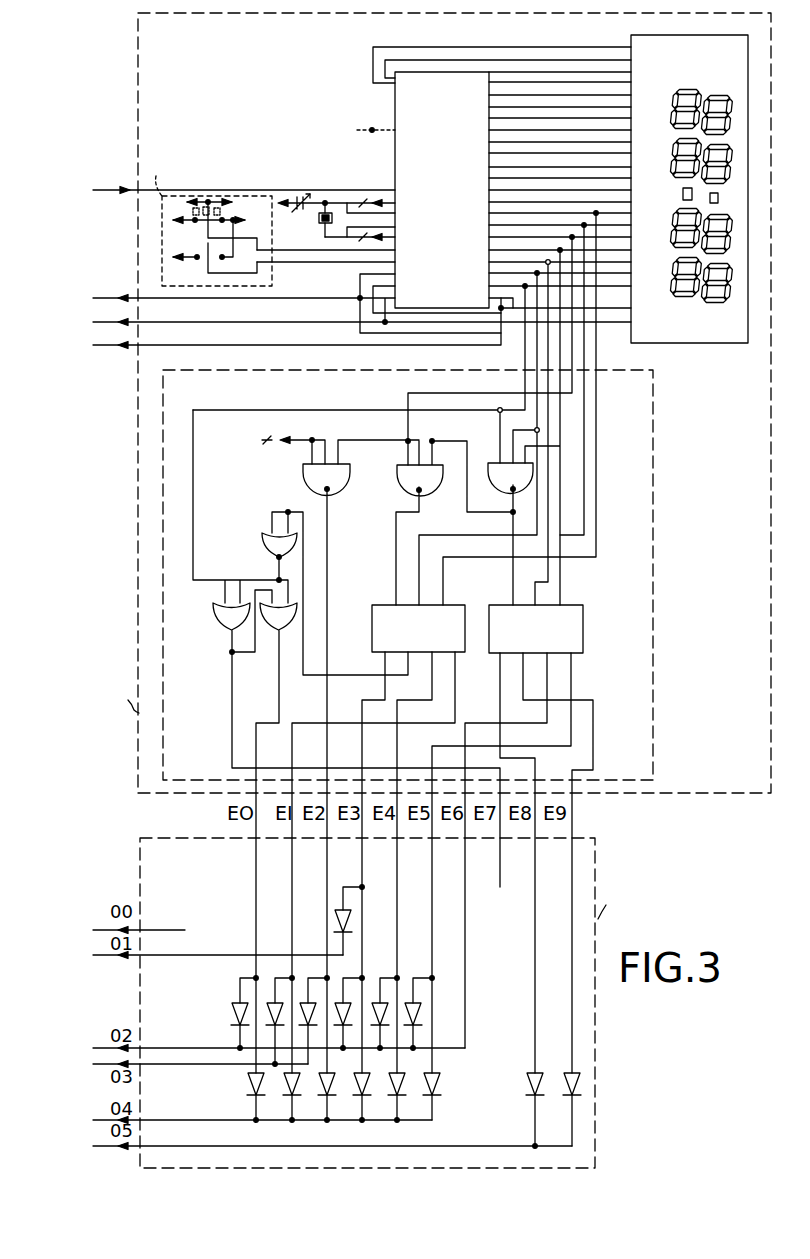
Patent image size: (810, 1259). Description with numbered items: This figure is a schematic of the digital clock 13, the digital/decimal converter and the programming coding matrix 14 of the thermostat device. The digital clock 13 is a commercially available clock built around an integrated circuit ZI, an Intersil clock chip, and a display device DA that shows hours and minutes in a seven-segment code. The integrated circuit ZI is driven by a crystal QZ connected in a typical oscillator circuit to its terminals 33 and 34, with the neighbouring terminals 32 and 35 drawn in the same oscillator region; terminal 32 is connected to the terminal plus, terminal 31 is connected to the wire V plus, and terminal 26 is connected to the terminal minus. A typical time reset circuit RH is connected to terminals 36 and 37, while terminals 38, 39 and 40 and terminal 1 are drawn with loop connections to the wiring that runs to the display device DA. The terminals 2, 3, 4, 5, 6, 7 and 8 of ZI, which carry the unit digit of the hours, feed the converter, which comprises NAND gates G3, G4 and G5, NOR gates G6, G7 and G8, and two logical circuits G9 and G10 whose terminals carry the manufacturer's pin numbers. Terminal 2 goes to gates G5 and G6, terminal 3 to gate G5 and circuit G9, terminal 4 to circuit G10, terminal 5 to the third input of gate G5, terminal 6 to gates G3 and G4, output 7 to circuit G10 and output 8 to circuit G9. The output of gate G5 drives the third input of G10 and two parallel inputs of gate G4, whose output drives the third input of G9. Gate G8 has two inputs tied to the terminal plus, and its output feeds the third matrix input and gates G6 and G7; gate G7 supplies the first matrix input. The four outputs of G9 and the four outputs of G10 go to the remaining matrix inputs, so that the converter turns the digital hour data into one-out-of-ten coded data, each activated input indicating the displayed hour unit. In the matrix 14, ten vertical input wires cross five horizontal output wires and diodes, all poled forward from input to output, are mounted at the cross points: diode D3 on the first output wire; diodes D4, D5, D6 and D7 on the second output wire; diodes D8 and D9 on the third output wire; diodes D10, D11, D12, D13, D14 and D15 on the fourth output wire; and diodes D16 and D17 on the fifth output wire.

The digital clock 13 is at (742, 788).
The programming coding matrix 14 is at (587, 848).
The terminal 26 of integrated circuit Z1 26 is at (390, 132).
The terminal 1 of integrated circuit Z1 1 is at (555, 298).
The terminal 2 of integrated circuit Z1 2 is at (412, 370).
The terminal 3 of integrated circuit Z1 3 is at (525, 434).
The terminal 4 of integrated circuit Z1 4 is at (549, 428).
The terminal 5 of integrated circuit Z1 5 is at (555, 422).
The terminal 6 of integrated circuit Z1 6 is at (518, 346).
The output 7 of integrated circuit Z1 7 is at (555, 375).
The output 8 of integrated circuit Z1 8 is at (537, 404).
The terminal 31 of integrated circuit Z1 31 is at (397, 189).
The terminal 32 of integrated circuit Z1 32 is at (419, 199).
The terminal 33 of integrated circuit Z1 33 is at (397, 214).
The terminal 34 of integrated circuit Z1 34 is at (419, 223).
The terminal 35 of integrated circuit Z1 35 is at (397, 238).
The terminal 36 of integrated circuit Z1 36 is at (419, 244).
The terminal 37 of integrated circuit Z1 37 is at (397, 263).
The terminal 38 of integrated circuit Z1 38 is at (419, 270).
The terminal 39 of integrated circuit Z1 39 is at (397, 287).
The terminal 40 of integrated circuit Z1 40 is at (419, 295).
The integrated circuit ZI is at (391, 106).
The display device DA is at (700, 345).
The crystal QZ is at (318, 221).
The time reset circuit RH is at (268, 280).
The NAND gate G3 is at (337, 478).
The NAND gate G4 is at (427, 483).
The NAND gate G5 is at (506, 490).
The NOR gate G6 is at (222, 618).
The NOR gate G7 is at (284, 628).
The NOR gate G8 is at (260, 547).
The logical circuit G9 is at (455, 604).
The logical circuit G10 is at (583, 630).
The diode D3 is at (340, 907).
The diode D4 is at (231, 1006).
The diode D5 is at (340, 1000).
The diode D6 is at (374, 1000).
The diode D7 is at (408, 1000).
The diode D8 is at (270, 1000).
The diode D9 is at (306, 1000).
The diode D10 is at (246, 1082).
The diode D11 is at (286, 1084).
The diode D12 is at (320, 1094).
The diode D13 is at (356, 1094).
The diode D14 is at (392, 1092).
The diode D15 is at (422, 1092).
The diode D16 is at (528, 1084).
The diode D17 is at (566, 1084).